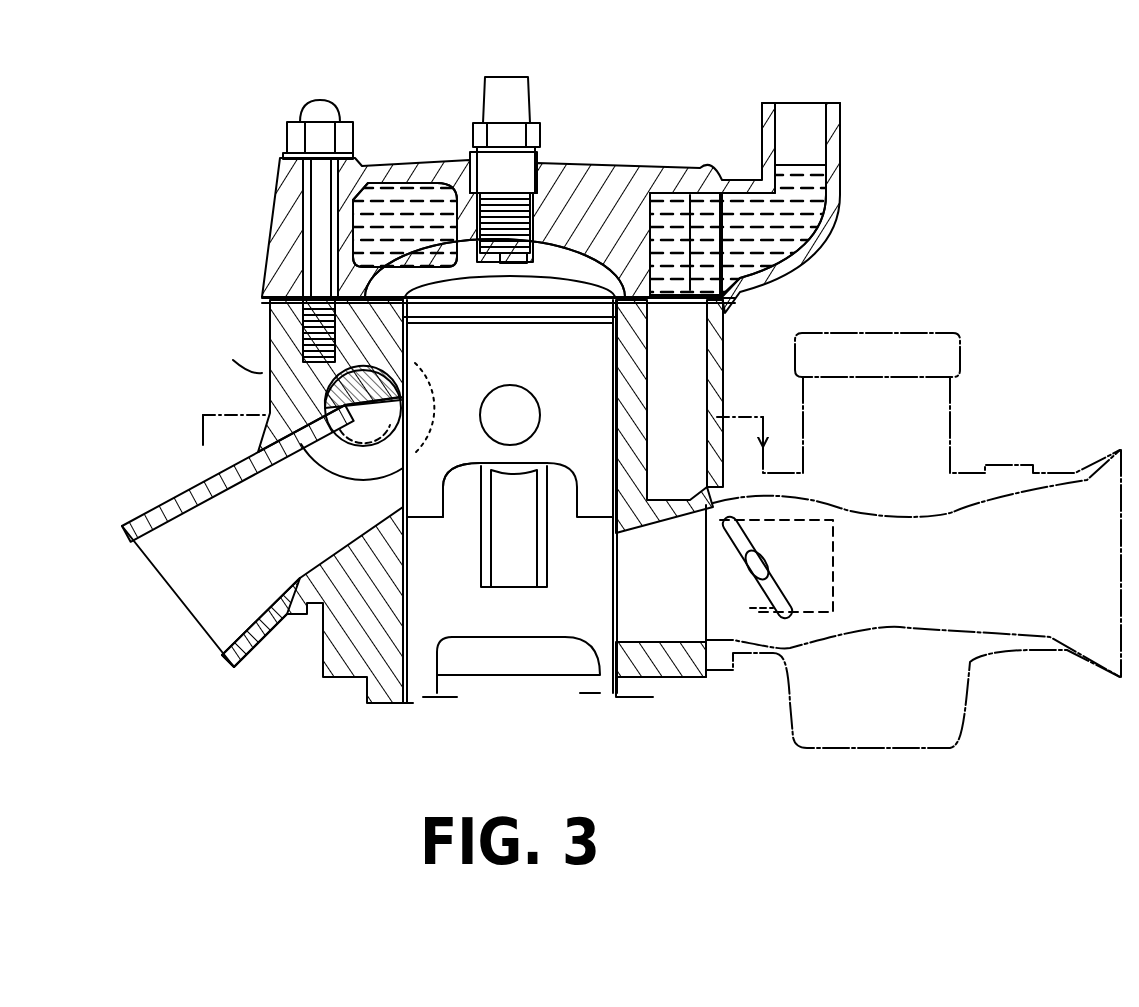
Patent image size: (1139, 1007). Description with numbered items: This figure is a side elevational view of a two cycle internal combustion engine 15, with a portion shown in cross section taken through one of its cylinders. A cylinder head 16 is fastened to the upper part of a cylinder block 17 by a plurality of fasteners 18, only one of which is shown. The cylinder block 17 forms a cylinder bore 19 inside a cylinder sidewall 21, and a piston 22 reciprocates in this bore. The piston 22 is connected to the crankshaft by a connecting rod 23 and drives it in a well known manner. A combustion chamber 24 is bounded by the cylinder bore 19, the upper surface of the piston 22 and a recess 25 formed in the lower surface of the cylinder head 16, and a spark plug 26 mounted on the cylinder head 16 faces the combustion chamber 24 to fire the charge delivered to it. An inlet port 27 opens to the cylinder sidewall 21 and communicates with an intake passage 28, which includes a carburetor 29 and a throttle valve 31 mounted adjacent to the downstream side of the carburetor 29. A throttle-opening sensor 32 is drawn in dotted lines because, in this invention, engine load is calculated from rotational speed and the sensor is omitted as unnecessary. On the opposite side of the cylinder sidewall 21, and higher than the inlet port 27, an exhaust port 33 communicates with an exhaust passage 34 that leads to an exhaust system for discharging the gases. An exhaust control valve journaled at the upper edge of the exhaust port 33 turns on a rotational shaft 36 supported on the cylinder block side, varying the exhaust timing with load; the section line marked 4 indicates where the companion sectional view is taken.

The section line 4- 4 is at (481, 431).
The two cycle internal combustion engine 15 is at (942, 247).
The cylinder head 16 is at (578, 153).
The cylinder block 17 is at (769, 343).
The fasteners 18 is at (310, 186).
The cylinder bore 19 is at (425, 617).
The cylinder sidewall 21 is at (613, 400).
The piston 22 is at (450, 450).
The connecting rod 23 is at (547, 545).
The combustion chamber 24 is at (570, 265).
The recess 25 is at (485, 268).
The spark plug 26 is at (547, 123).
The inlet port 27 is at (613, 620).
The intake passage 28 is at (873, 628).
The carburetor 29 is at (940, 422).
The throttle valve 31 is at (790, 580).
The throttle-opening sensor 32 is at (763, 620).
The exhaust port 33 is at (400, 487).
The exhaust passage 34 is at (200, 625).
The rotational shaft 36 is at (327, 457).